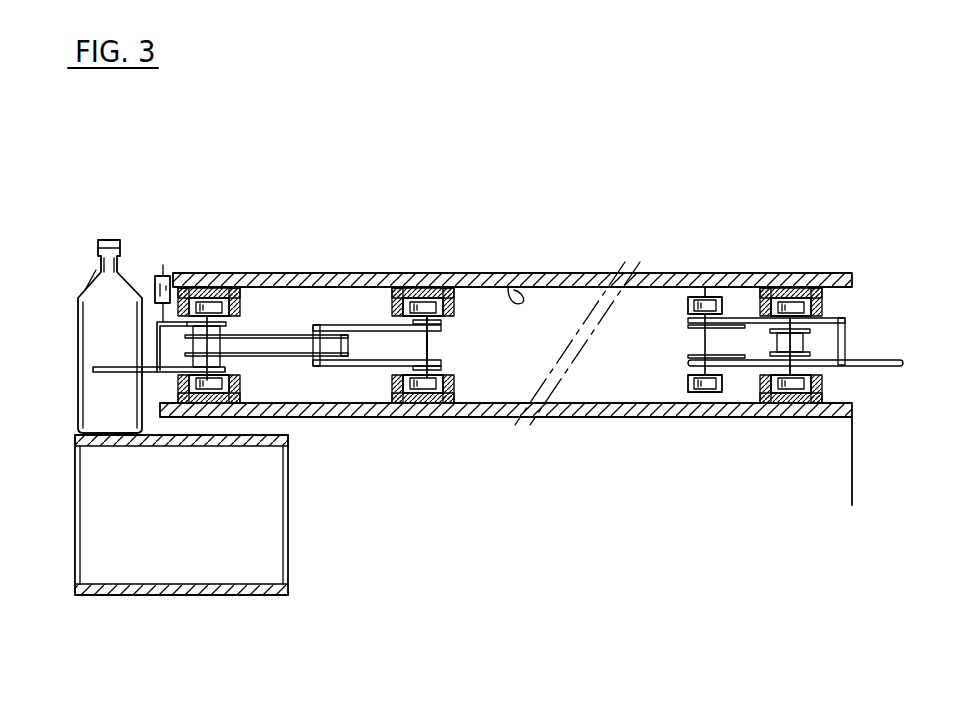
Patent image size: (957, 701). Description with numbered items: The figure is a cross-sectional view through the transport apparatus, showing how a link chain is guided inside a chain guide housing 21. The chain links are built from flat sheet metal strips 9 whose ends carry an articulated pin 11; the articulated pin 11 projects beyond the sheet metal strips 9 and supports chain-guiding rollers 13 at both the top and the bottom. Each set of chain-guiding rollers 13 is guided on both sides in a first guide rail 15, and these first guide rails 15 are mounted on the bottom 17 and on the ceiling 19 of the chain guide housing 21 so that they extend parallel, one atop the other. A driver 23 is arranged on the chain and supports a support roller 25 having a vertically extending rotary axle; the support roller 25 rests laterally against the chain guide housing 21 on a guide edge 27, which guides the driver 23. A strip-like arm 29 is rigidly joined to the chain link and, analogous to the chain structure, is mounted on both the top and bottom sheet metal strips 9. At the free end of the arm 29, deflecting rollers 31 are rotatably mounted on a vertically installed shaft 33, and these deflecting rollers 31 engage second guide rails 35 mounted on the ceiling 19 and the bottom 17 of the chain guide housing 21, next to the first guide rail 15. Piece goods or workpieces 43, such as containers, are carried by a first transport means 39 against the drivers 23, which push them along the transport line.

The flat sheet metal strips 9 is at (298, 325).
The articulated pin 11 is at (220, 346).
The chain-guiding rollers 13 is at (218, 297).
The first guide rail 15 is at (240, 292).
The bottom 17 is at (380, 415).
The ceiling 19 is at (512, 287).
The chain guide housing 21 is at (549, 268).
The driver 23 is at (93, 372).
The support roller 25 is at (160, 270).
The guide edge 27 is at (173, 273).
The arm 29 is at (382, 326).
The deflecting rollers 31 is at (430, 298).
The shaft 33 is at (433, 347).
The second guide rails 35 is at (456, 305).
The first transport means 39 is at (150, 595).
The piece goods or workpieces 43 is at (120, 344).